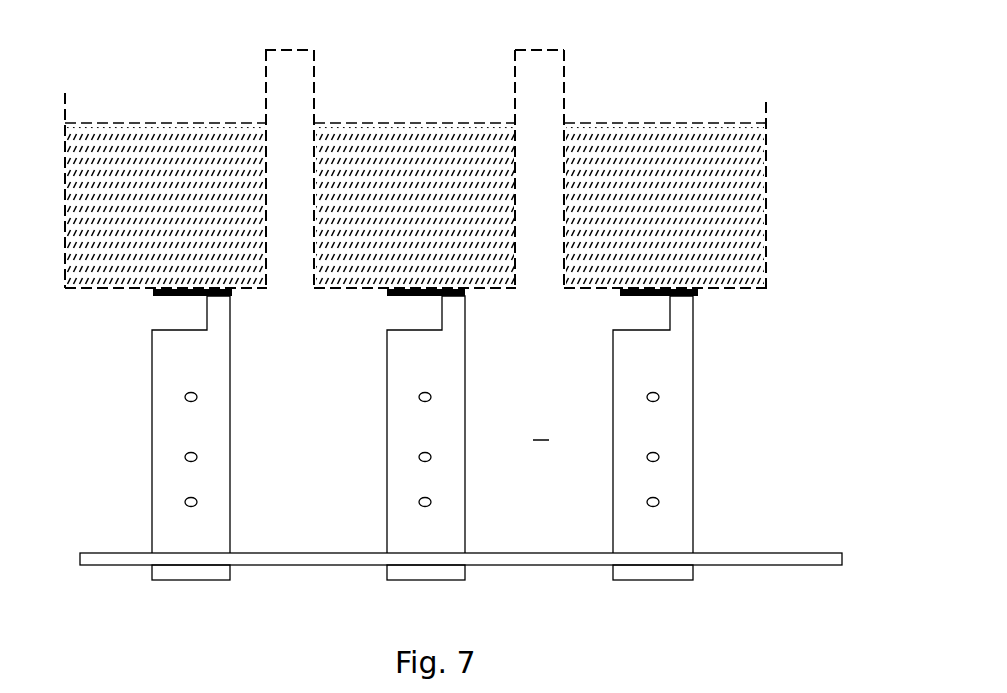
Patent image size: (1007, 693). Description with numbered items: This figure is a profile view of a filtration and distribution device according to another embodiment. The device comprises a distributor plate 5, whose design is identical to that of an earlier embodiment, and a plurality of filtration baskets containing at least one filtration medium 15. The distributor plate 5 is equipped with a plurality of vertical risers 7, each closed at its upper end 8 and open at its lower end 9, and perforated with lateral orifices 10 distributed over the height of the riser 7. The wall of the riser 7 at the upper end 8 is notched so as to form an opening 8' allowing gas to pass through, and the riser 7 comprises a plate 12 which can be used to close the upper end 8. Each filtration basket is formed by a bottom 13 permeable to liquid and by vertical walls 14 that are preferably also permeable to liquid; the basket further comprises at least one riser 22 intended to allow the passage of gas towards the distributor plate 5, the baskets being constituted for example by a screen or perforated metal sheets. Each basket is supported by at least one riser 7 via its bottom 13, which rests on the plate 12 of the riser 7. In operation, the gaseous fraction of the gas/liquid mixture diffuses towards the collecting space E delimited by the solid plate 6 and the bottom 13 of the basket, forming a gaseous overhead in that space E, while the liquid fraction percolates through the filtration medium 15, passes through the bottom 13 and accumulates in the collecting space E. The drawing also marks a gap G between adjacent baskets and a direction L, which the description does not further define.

The distributor plate 5 is at (86, 462).
The solid plate 6 is at (773, 553).
The vertical riser 7 is at (231, 438).
The upper end 8 is at (714, 424).
The opening 8' is at (621, 316).
The lower end 9 is at (655, 580).
The lateral orifice 10 is at (427, 502).
The plate 12 is at (400, 290).
The bottom 13 is at (421, 212).
The vertical wall 14 is at (767, 165).
The filtration medium 15 is at (420, 212).
The riser 22 is at (566, 83).
The gap G is at (283, 101).
The collecting space E is at (541, 428).
The length direction L is at (113, 343).